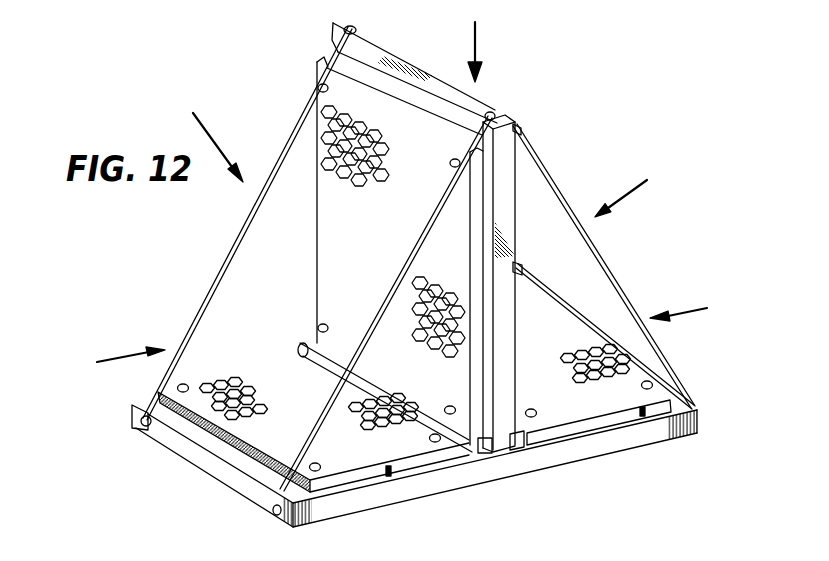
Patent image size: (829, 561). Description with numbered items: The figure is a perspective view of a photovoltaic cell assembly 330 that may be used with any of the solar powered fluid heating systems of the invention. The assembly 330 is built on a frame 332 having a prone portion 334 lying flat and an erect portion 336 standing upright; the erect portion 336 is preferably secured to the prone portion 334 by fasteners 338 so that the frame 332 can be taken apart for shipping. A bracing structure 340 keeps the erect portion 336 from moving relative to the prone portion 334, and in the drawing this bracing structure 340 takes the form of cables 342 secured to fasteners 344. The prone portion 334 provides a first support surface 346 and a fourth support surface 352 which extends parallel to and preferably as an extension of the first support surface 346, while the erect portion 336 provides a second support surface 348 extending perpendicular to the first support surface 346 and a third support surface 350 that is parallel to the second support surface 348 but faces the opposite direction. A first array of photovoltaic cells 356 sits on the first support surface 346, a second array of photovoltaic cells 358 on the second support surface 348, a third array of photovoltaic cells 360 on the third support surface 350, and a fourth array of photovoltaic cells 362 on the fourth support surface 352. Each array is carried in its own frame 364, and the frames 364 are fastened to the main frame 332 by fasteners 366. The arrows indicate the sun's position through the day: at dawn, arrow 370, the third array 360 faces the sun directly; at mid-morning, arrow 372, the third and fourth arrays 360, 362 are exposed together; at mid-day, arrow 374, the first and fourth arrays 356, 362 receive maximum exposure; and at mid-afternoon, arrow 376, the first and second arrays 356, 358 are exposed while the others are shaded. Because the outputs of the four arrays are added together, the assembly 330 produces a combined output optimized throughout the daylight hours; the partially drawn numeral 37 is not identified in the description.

The photovoltaic cell assembly 330 is at (165, 246).
The frame 332 is at (585, 452).
The prone portion 334 is at (410, 490).
The erect portion 336 is at (508, 160).
The fasteners 338 is at (505, 440).
The bracing structure 340 is at (287, 141).
The cables 342 is at (200, 310).
The fasteners 344 is at (343, 26).
The first support surface 346 is at (388, 477).
The second support surface 348 is at (473, 259).
The third support surface 350 is at (521, 264).
The fourth support surface 352 is at (646, 408).
The first array of photovoltaic cells 356 is at (268, 378).
The second array of photovoltaic cells 358 is at (335, 242).
The third array of photovoltaic cells 360 is at (538, 189).
The fourth array of photovoltaic cells 362 is at (553, 350).
The frame 364 is at (217, 432).
The fasteners 366 is at (318, 88).
The arrow 370 is at (685, 308).
The arrow 372 is at (647, 180).
The arrow 374 is at (477, 32).
The arrow 376 is at (200, 123).
The direction arrow 37 is at (110, 367).